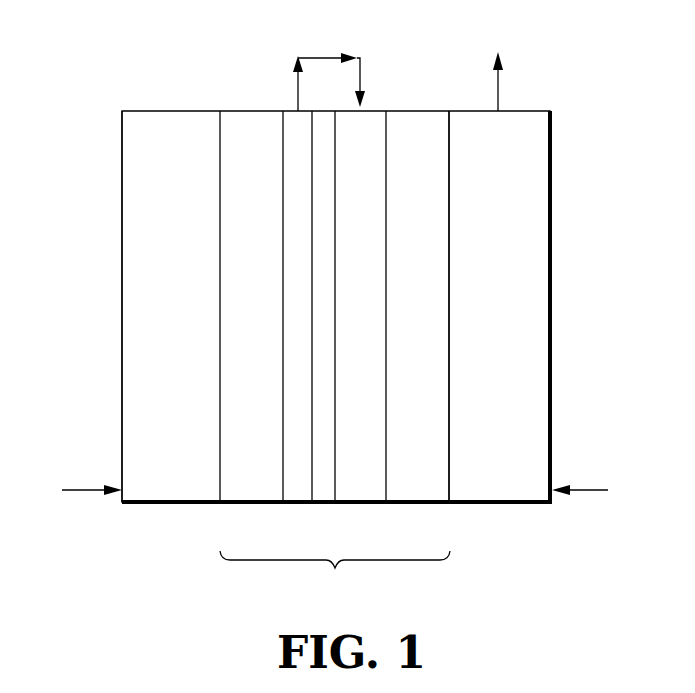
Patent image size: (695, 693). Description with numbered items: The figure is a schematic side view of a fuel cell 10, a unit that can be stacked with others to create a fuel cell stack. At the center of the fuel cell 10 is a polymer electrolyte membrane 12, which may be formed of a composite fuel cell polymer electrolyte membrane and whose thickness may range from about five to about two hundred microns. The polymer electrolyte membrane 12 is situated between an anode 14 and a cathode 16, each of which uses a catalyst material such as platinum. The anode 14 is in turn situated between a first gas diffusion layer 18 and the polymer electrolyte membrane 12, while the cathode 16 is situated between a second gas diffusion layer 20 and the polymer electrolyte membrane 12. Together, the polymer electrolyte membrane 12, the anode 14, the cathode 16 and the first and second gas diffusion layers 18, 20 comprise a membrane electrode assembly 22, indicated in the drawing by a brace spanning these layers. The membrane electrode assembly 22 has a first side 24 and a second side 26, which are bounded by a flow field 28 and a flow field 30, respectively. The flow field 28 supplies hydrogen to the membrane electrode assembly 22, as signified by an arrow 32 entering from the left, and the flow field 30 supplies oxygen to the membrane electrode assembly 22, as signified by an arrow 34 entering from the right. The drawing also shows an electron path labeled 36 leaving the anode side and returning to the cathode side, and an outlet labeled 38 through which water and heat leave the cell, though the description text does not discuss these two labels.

The fuel cell 10 is at (606, 245).
The polymer electrolyte membrane 12 is at (318, 111).
The anode 14 is at (297, 502).
The cathode 16 is at (362, 502).
The first gas diffusion layer 18 is at (252, 111).
The second gas diffusion layer 20 is at (417, 111).
The membrane electrode assembly 22 is at (335, 575).
The first side 24 is at (220, 111).
The second side 26 is at (450, 111).
The flow field 28 is at (157, 111).
The flow field 30 is at (533, 111).
The arrow 32 is at (82, 490).
The arrow 34 is at (588, 490).
The electron flow path 36 is at (296, 92).
The water and heat outlet 38 is at (498, 100).